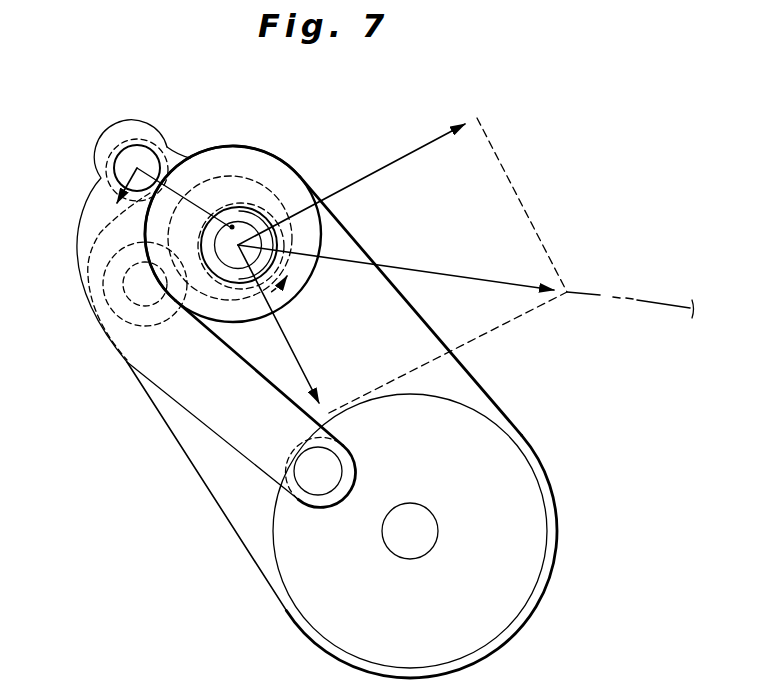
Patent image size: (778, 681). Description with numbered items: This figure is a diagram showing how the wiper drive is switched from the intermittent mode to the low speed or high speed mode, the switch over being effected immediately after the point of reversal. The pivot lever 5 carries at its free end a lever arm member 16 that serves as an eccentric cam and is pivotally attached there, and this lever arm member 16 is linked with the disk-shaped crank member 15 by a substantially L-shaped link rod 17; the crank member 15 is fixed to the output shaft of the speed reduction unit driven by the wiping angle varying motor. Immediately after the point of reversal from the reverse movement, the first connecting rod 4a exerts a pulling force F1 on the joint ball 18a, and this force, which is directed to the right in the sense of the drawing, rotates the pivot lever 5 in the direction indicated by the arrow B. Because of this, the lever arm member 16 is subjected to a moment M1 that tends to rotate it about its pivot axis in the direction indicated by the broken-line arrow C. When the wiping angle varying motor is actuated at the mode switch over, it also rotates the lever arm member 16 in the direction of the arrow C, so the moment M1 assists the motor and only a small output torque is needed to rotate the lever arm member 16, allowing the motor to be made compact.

The pivot lever 5 is at (208, 490).
The crank member 15 is at (559, 492).
The lever arm member 16 is at (213, 165).
The link rod 17 is at (77, 244).
The joint ball 18a is at (248, 207).
The pivot axis I is at (163, 150).
The moment M1 is at (113, 172).
The arrow B is at (360, 144).
The pulling force F1 is at (432, 270).
The first connecting rod 4a is at (603, 291).
The arrow C is at (280, 300).